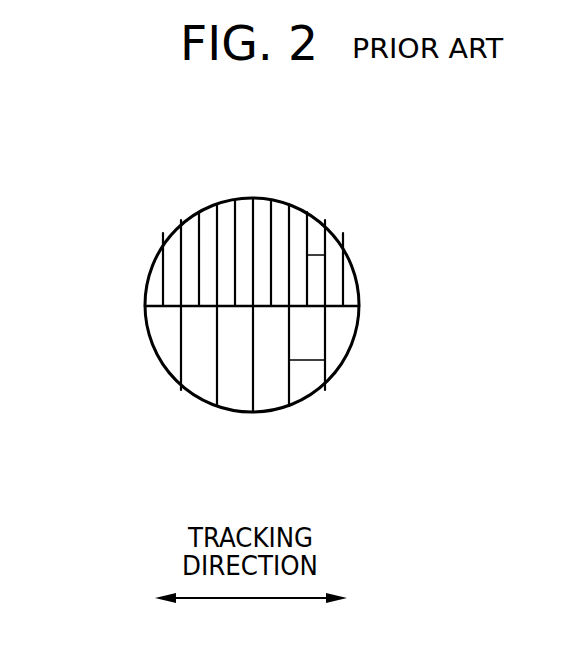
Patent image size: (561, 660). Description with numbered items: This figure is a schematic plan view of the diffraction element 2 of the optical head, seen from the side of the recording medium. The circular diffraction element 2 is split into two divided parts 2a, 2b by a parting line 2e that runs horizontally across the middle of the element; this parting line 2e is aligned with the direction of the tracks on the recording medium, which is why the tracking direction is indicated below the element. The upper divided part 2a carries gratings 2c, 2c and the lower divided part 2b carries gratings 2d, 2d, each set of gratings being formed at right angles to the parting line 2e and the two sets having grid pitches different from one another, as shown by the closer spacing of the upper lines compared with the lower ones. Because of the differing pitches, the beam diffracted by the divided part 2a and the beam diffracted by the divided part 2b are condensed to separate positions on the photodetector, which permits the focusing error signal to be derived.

The diffraction element 2 is at (62, 197).
The divided part 2a is at (243, 207).
The divided part 2b is at (238, 405).
The gratings 2c is at (305, 255).
The gratings 2d is at (288, 360).
The parting line 2e is at (145, 307).